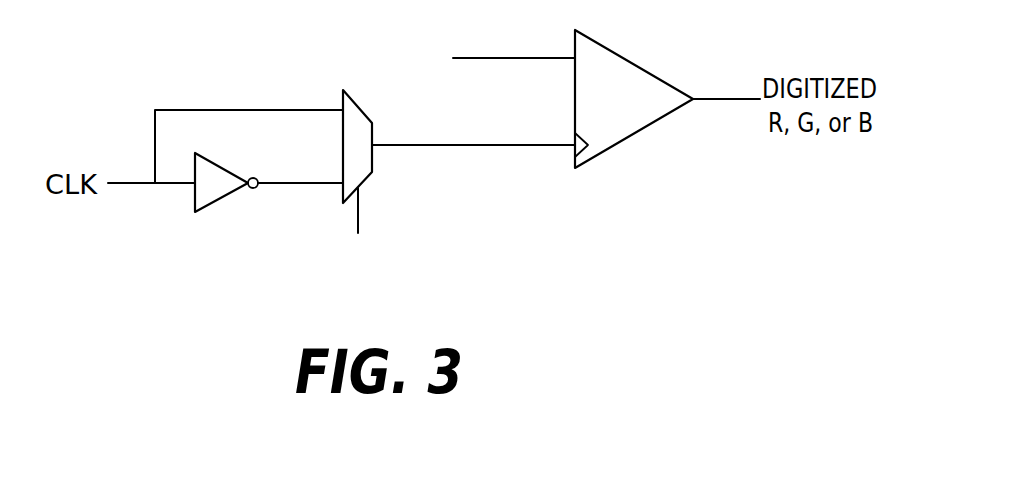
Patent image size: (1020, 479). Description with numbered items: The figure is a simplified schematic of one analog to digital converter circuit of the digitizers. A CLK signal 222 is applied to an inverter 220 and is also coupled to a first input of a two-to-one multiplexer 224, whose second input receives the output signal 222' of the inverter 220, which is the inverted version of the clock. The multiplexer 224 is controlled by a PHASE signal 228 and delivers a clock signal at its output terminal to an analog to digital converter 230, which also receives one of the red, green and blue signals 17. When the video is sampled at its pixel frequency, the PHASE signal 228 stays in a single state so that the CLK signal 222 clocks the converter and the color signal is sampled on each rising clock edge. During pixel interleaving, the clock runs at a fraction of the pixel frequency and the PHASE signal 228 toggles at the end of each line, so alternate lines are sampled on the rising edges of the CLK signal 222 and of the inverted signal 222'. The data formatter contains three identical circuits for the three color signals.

The red, green and blue signals 17 is at (490, 58).
The inverter 220 is at (217, 160).
The CLK signal 222 is at (249, 123).
The output signal of the inverter 222' is at (285, 209).
The 2:1 multiplexer 224 is at (358, 105).
The PHASE signal 228 is at (358, 246).
The analog to digital converter 230 is at (615, 50).